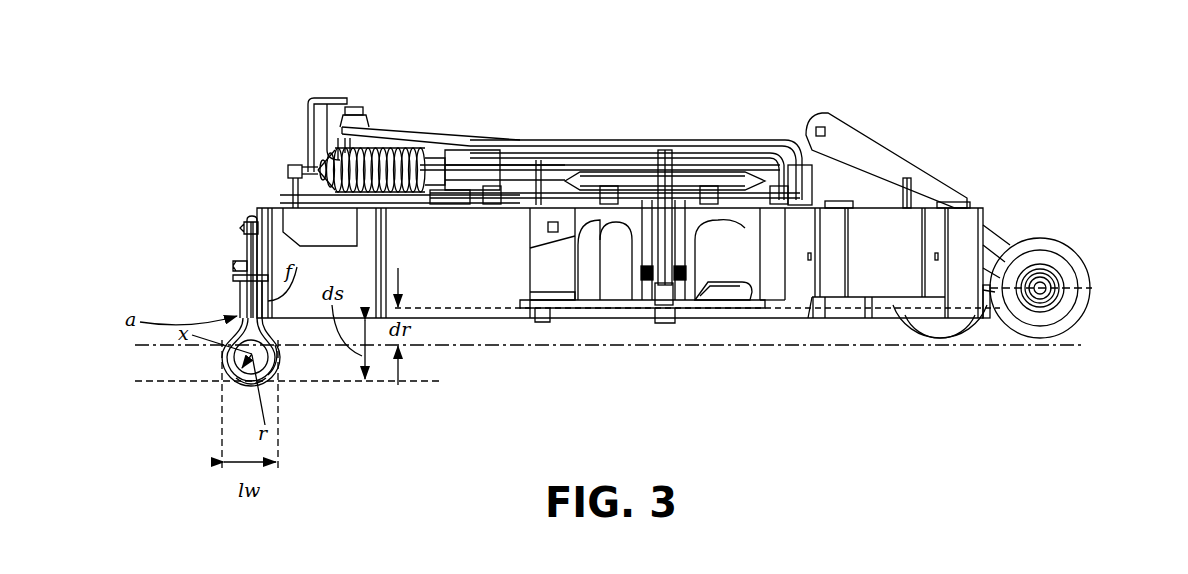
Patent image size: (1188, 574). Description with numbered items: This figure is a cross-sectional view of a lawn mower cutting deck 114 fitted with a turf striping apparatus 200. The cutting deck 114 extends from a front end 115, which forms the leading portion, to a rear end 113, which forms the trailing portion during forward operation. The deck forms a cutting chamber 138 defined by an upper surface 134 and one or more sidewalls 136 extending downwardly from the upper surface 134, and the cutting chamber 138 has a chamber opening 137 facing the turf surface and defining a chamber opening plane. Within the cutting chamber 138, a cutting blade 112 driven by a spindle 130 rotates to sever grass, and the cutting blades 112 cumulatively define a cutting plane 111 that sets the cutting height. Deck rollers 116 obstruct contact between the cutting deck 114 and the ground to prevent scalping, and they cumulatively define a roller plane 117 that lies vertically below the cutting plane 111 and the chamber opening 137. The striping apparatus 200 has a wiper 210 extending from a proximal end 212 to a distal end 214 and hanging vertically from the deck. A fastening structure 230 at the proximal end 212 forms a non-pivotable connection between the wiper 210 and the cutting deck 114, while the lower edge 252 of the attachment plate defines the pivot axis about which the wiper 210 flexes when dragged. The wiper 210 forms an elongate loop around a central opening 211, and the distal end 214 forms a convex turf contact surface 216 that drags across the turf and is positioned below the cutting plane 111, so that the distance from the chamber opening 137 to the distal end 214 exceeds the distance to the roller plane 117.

The cutting plane 111 is at (455, 312).
The cutting blade 112 is at (725, 295).
The rear end 113 is at (253, 128).
The cutting deck 114 is at (747, 135).
The front end 115 is at (930, 143).
The deck roller 116 is at (1084, 258).
The roller plane 117 is at (705, 345).
The spindle 130 is at (655, 252).
The upper surface 134 is at (887, 205).
The sidewall 136 is at (985, 228).
The chamber opening 137 is at (845, 318).
The cutting chamber 138 is at (775, 290).
The turf striping apparatus 200 is at (292, 372).
The wiper 210 is at (228, 350).
The central opening 211 is at (260, 377).
The proximal end 212 is at (245, 246).
The distal end 214 is at (250, 383).
The turf contact surface 216 is at (234, 365).
The fastening structure 230 is at (224, 284).
The lower edge 252 is at (236, 301).